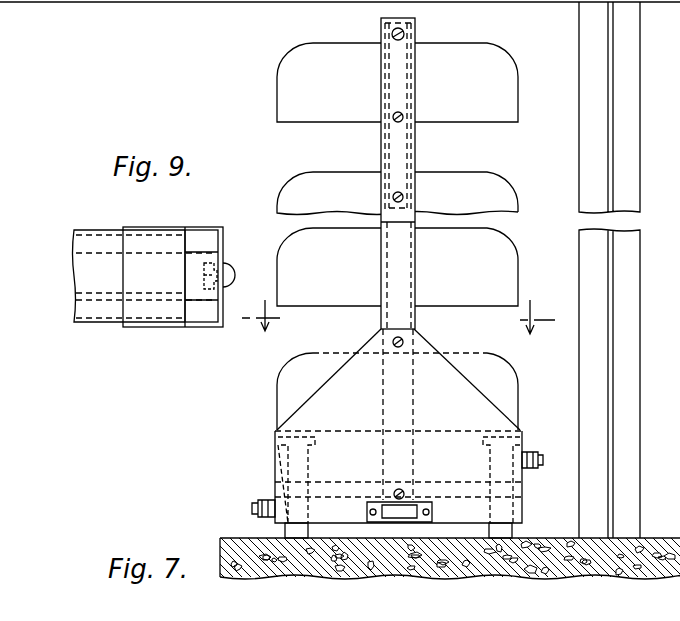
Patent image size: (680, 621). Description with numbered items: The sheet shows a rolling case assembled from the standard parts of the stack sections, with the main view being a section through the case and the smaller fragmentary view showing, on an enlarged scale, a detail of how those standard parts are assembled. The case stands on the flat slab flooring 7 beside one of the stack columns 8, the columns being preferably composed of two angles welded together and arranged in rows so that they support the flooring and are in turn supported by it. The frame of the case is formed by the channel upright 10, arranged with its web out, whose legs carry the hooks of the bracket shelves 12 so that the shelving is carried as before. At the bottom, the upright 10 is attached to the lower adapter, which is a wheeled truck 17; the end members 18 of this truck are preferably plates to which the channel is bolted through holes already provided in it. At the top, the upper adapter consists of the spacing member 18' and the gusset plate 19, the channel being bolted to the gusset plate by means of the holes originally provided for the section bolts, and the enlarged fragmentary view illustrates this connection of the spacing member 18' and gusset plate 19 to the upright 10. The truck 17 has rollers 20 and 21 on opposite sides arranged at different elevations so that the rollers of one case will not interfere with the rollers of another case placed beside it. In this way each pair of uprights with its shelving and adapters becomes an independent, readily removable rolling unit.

In FIG. 7, the flat slab flooring 7 is at (398, 305).
In FIG. 7, the stack column 8 is at (590, 126).
In FIG. 7, the upright 10 is at (405, 308).
In FIG. 9, the upright 10 is at (207, 227).
In FIG. 7, the bracket shelf 12 is at (470, 118).
In FIG. 7, the wheeled truck 17 is at (381, 480).
In FIG. 7, the end member 18 is at (398, 433).
In FIG. 7, the spacing member 18' is at (433, 110).
In FIG. 9, the spacing member 18' is at (145, 305).
In FIG. 7, the gusset plate 19 is at (410, 80).
In FIG. 9, the gusset plate 19 is at (200, 301).
In FIG. 7, the roller 20 is at (252, 505).
In FIG. 7, the roller 21 is at (543, 460).